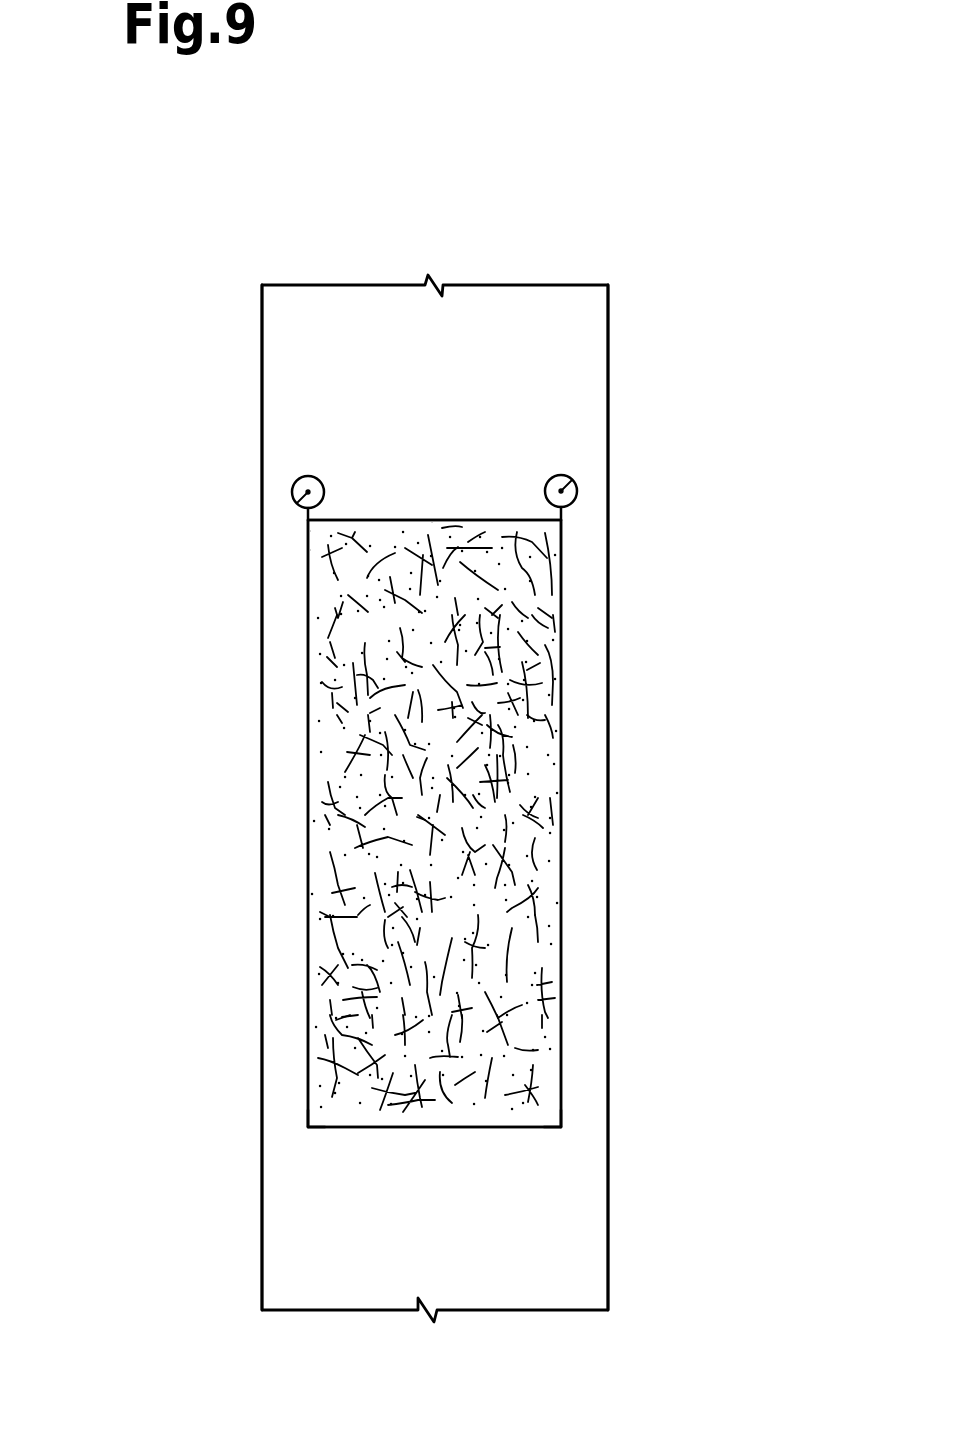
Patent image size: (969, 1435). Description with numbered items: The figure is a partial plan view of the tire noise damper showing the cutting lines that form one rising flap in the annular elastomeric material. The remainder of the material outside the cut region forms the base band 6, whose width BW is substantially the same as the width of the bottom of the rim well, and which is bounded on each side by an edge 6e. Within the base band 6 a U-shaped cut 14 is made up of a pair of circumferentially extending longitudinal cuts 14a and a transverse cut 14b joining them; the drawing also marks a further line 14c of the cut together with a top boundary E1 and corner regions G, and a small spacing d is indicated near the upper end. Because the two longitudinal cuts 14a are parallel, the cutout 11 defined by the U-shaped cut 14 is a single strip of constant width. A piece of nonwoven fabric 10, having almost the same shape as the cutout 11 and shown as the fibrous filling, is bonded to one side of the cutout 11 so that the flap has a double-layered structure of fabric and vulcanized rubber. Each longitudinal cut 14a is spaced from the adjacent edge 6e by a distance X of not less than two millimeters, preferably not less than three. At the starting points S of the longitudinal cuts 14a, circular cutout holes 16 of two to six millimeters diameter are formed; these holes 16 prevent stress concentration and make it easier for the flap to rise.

The base band 6 is at (577, 390).
The edge 6e is at (262, 334).
The width of the base band BW is at (608, 278).
The distance between edge and strip d is at (354, 437).
The circular cutout holes 16 is at (293, 494).
The starting points S is at (297, 505).
The U-shaped cut 14 is at (81, 1142).
The longitudinal cuts 14a is at (560, 1062).
The transverse cut 14b is at (372, 1127).
The strip member side c 14c is at (307, 1083).
The edge of strip E1 is at (423, 502).
The corner gap G is at (305, 1130).
The distance between the longitudinal cut and the edge X is at (285, 775).
The nonwoven fabric 10 is at (362, 860).
The cutout 11 is at (368, 930).